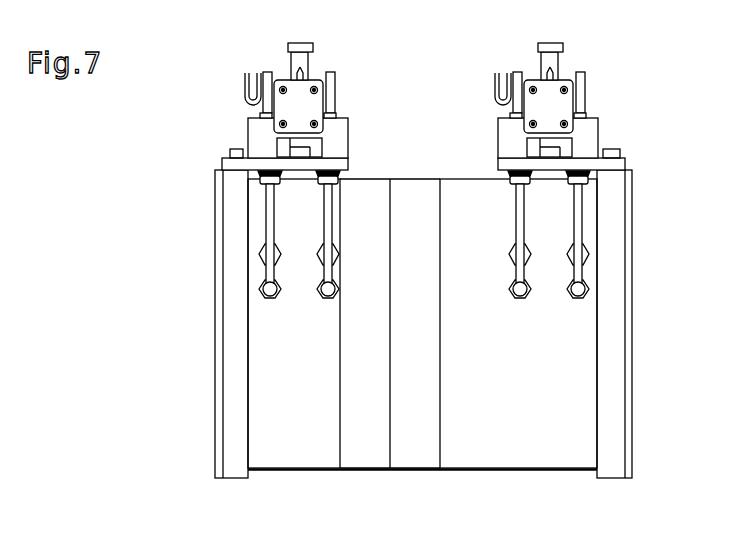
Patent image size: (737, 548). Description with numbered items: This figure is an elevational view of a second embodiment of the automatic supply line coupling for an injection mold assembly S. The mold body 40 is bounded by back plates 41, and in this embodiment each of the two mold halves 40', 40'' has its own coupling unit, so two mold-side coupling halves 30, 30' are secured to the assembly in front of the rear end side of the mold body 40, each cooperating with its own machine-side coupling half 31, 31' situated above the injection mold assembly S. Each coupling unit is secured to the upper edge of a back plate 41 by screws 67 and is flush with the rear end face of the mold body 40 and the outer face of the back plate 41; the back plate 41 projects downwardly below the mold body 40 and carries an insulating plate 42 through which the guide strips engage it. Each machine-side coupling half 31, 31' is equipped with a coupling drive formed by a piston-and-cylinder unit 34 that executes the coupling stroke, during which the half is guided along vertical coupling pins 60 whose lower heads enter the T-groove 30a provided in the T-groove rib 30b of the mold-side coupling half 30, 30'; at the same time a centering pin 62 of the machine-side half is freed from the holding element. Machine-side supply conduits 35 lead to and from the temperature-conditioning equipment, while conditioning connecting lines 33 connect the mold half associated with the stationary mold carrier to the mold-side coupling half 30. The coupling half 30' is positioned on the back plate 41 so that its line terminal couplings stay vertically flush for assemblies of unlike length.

The injection mold assembly S is at (214, 285).
The mold-side coupling half 30 is at (320, 163).
The mold-side coupling half 30' is at (609, 164).
The T-groove 30a is at (485, 121).
The T-groove rib 30b is at (317, 152).
The machine-side coupling half 31 is at (250, 138).
The machine-side coupling half 31' is at (519, 136).
The conditioning connecting lines 33 is at (421, 234).
The piston-and-cylinder unit 34 is at (312, 113).
The machine-side supply conduits 35 is at (268, 80).
The mold body 40 is at (422, 357).
The mold half 40' is at (294, 323).
The mold half 40'' is at (518, 323).
The back plate 41 is at (230, 344).
The insulating plate 42 is at (217, 402).
The coupling pins 60 is at (287, 54).
The centering pin 62 is at (266, 79).
The screws 67 is at (220, 160).